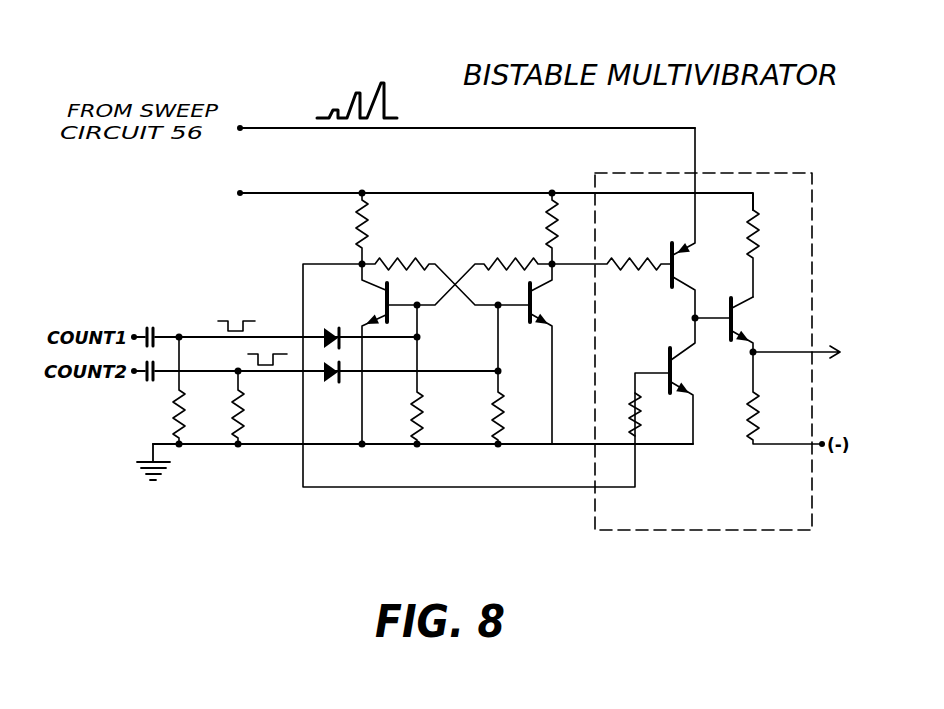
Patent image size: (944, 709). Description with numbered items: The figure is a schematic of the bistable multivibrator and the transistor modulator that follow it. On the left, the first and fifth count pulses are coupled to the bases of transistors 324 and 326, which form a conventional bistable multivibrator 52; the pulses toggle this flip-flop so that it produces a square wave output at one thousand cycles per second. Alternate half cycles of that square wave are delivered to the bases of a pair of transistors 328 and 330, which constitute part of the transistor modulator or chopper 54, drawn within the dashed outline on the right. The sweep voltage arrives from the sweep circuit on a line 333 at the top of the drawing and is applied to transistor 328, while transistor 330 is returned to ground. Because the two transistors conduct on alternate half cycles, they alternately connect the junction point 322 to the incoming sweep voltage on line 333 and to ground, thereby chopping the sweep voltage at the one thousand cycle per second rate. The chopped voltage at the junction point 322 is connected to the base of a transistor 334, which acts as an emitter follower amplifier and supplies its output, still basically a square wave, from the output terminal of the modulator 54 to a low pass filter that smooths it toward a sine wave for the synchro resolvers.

The line 333 is at (440, 129).
The transistor 324 is at (381, 296).
The transistor 326 is at (542, 290).
The bistable multivibrator 52 is at (470, 349).
The transistor modulator 54 is at (685, 530).
The transistor 328 is at (682, 257).
The junction point 322 is at (693, 318).
The transistor 334 is at (752, 330).
The transistor 330 is at (684, 362).